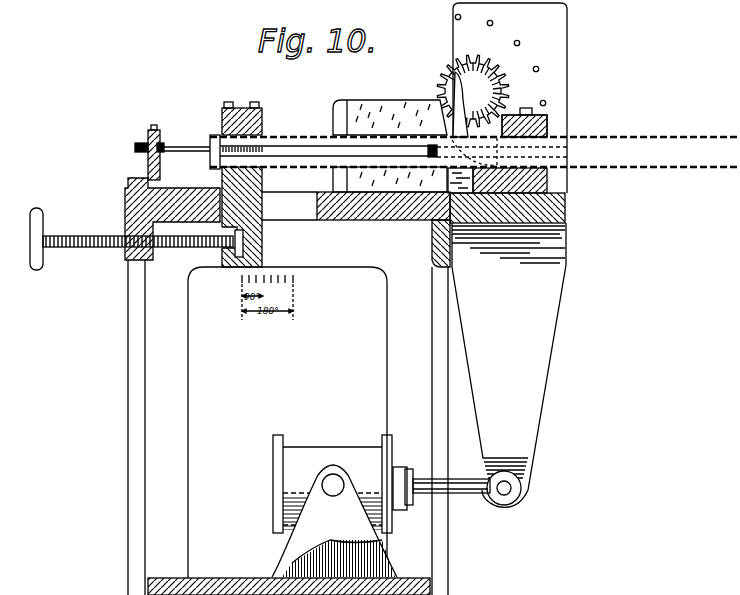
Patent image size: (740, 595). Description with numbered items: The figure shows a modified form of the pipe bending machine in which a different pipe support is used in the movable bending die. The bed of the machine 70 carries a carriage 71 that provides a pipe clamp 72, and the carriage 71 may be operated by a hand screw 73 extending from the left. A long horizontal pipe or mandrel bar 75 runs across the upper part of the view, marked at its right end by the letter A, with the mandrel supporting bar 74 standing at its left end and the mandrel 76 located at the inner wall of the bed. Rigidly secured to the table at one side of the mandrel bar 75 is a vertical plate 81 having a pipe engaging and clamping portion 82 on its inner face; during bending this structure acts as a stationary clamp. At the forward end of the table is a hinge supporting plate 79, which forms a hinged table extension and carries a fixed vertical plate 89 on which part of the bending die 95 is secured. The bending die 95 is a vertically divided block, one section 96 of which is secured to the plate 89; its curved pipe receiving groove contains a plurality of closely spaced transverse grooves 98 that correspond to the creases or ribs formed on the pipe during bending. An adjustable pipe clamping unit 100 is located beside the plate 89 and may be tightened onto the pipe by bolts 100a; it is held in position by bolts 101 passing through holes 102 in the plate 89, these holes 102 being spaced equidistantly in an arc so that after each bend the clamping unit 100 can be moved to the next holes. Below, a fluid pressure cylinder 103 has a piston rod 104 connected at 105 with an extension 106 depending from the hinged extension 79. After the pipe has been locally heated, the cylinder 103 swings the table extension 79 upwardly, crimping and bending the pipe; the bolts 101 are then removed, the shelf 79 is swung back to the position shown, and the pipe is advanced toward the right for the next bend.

The bed of the machine 70 is at (363, 221).
The carriage 71 is at (265, 178).
The pipe clamp 72 is at (265, 114).
The hand screw 73 is at (97, 248).
The mandrel supporting bar 74 is at (154, 131).
The mandrel bar 75 is at (183, 148).
The mandrel 76 is at (415, 221).
The hinge supporting plate / table extension 79 is at (557, 211).
The vertical plate 81 is at (343, 100).
The pipe engaging and clamping portion 82 is at (388, 112).
The fixed vertical plate 89 is at (555, 25).
The bending die 95 is at (455, 76).
The bending die section 96 is at (477, 59).
The transverse grooves or indentations 98 is at (499, 74).
The adjustable pipe clamping unit 100 is at (548, 126).
The bolts 100a is at (531, 107).
The bolts 101 is at (483, 228).
The holes 102 is at (539, 67).
The fluid pressure cylinder 103 is at (322, 454).
The piston rod 104 is at (472, 498).
The connection 105 is at (513, 487).
The extension 106 is at (522, 422).
The shaft A is at (668, 134).